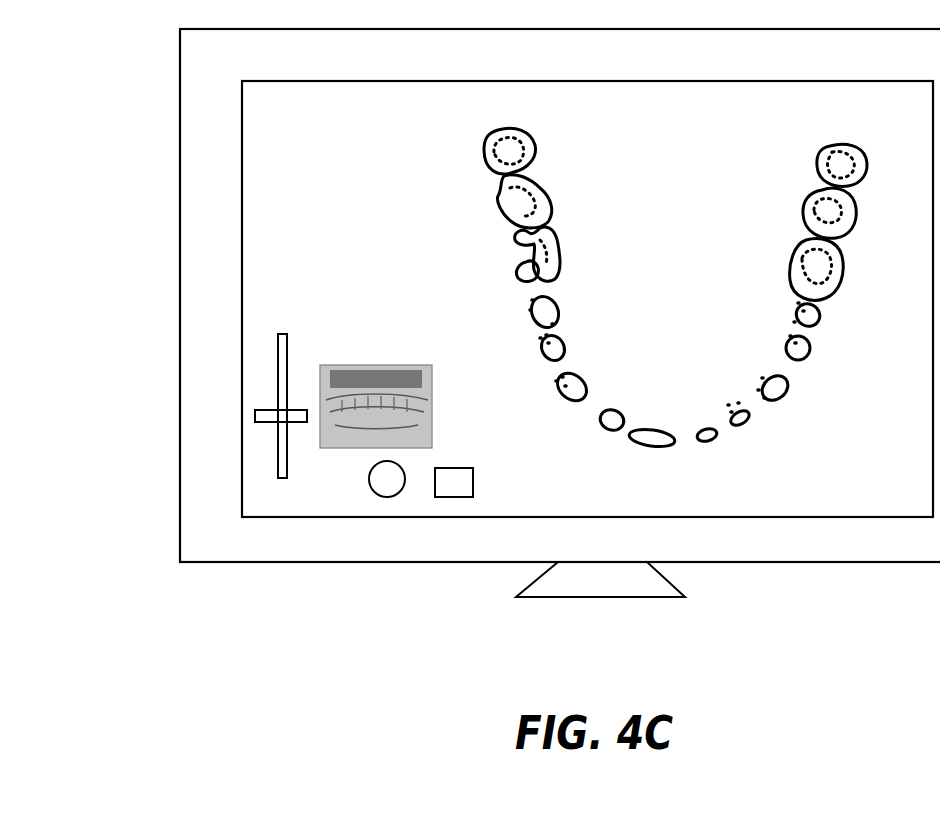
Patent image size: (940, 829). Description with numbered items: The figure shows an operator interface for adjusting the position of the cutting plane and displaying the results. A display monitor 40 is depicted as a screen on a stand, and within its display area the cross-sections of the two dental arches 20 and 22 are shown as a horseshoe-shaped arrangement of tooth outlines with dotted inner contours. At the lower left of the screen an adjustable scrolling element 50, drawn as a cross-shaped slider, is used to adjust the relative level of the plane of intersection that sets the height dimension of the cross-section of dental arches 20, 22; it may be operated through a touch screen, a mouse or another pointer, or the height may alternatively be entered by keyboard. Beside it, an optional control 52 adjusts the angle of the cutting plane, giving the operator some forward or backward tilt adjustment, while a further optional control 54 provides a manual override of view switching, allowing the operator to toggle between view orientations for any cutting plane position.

The dental arch 20 is at (535, 143).
The dental arch 22 is at (832, 170).
The display monitor 40 is at (180, 360).
The adjustable scrolling element 50 is at (296, 424).
The control for adjusting the angle of the cutting plane 52 is at (392, 497).
The control for manual override of view switching 54 is at (475, 487).